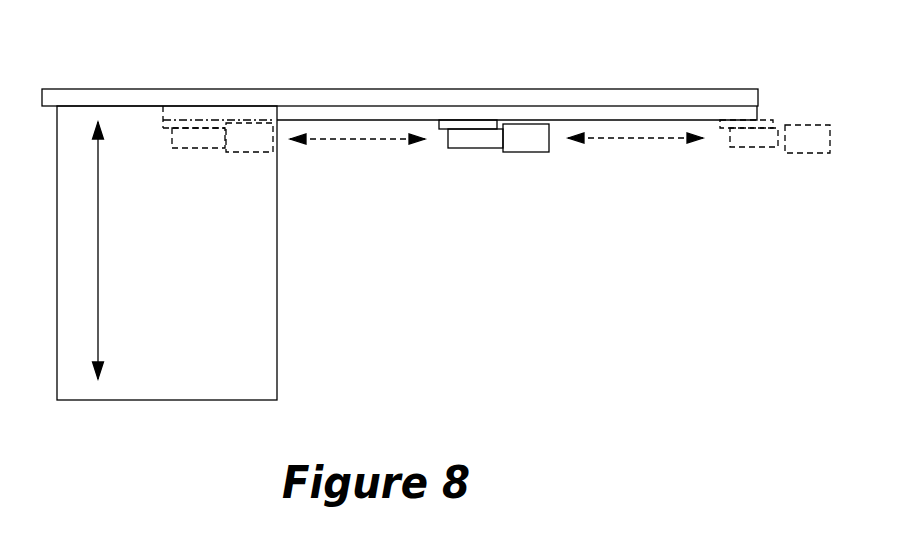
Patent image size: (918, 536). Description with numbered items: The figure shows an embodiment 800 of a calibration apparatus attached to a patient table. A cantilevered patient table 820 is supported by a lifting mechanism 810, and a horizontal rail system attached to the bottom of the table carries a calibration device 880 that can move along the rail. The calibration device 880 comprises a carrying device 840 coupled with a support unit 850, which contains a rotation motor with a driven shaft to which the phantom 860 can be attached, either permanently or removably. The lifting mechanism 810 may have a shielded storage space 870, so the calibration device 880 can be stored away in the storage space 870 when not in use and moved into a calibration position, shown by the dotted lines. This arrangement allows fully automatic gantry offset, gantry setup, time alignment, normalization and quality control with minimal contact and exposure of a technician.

The rotational casing scanning assembly 800 is at (497, 330).
The lifting mechanism 810 is at (272, 288).
The cantilevered patient table 820 is at (697, 89).
The carrying device 840 is at (467, 124).
The support unit 850 is at (477, 143).
The phantom 860 is at (527, 148).
The shielded storage space 870 is at (266, 181).
The calibration device 880 is at (506, 185).